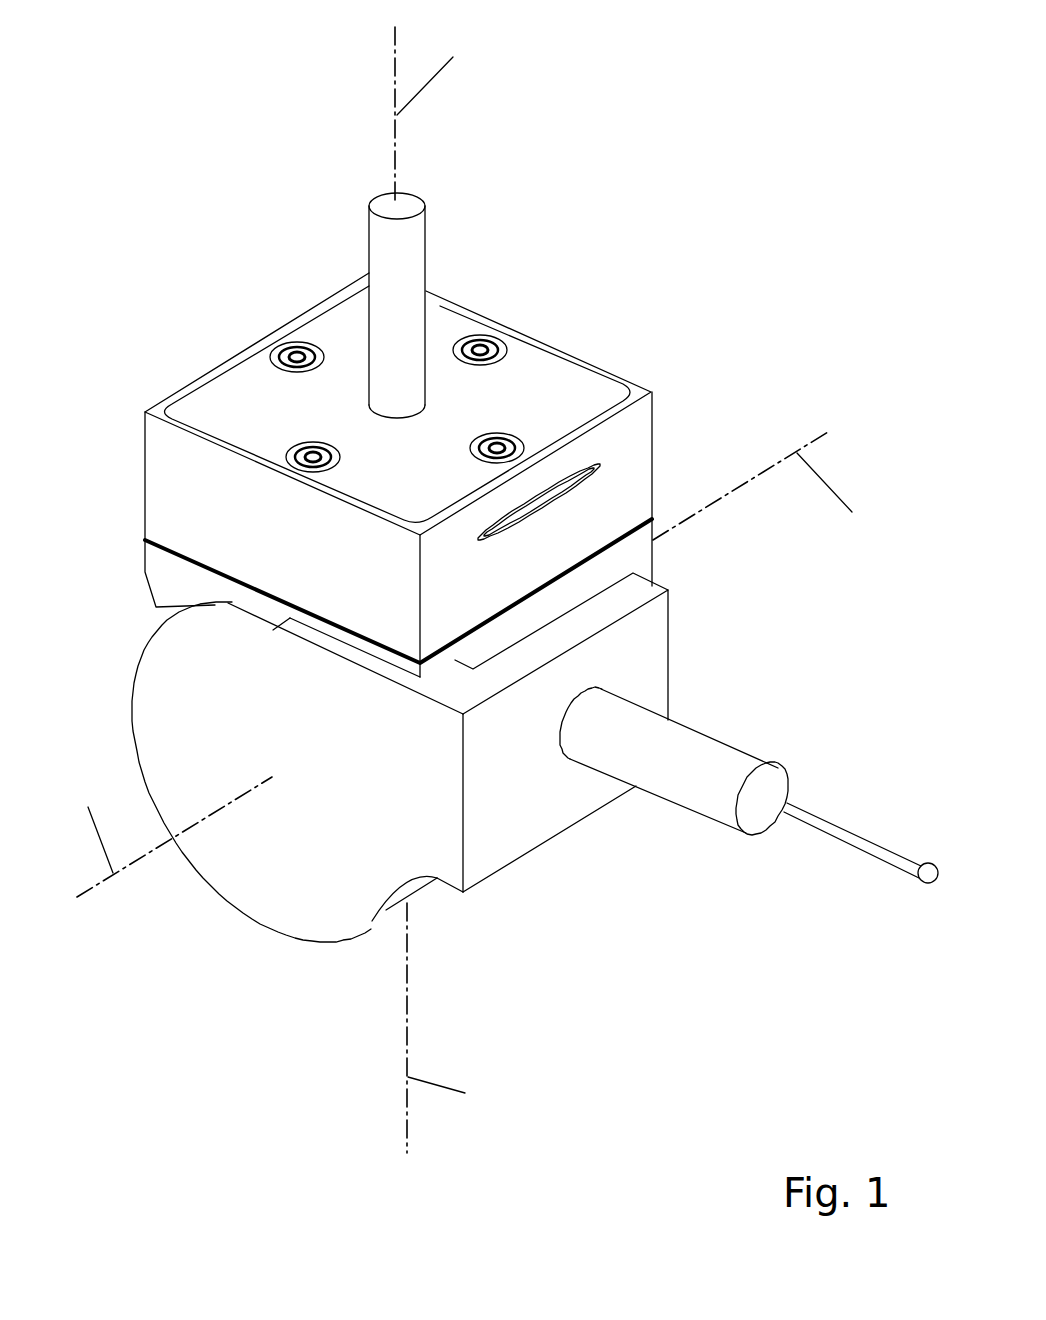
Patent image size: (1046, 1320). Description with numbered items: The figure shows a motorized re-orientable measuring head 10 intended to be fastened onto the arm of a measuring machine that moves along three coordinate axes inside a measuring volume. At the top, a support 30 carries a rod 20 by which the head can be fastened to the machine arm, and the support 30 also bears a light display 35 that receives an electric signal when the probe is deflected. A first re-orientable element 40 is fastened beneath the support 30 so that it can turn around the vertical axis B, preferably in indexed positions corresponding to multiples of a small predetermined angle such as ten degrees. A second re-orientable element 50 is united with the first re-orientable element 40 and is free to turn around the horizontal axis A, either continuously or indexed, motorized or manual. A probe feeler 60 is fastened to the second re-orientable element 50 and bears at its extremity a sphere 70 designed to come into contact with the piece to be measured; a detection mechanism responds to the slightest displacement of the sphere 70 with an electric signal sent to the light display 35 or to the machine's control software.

The re-orientable measuring head 10 is at (702, 220).
The rod 20 is at (383, 252).
The support 30 is at (625, 433).
The light display 35 is at (567, 495).
The first re-orientable element 40 is at (637, 555).
The second re-orientable element 50 is at (638, 650).
The probe feeler 60 is at (680, 787).
The sphere 70 is at (930, 863).